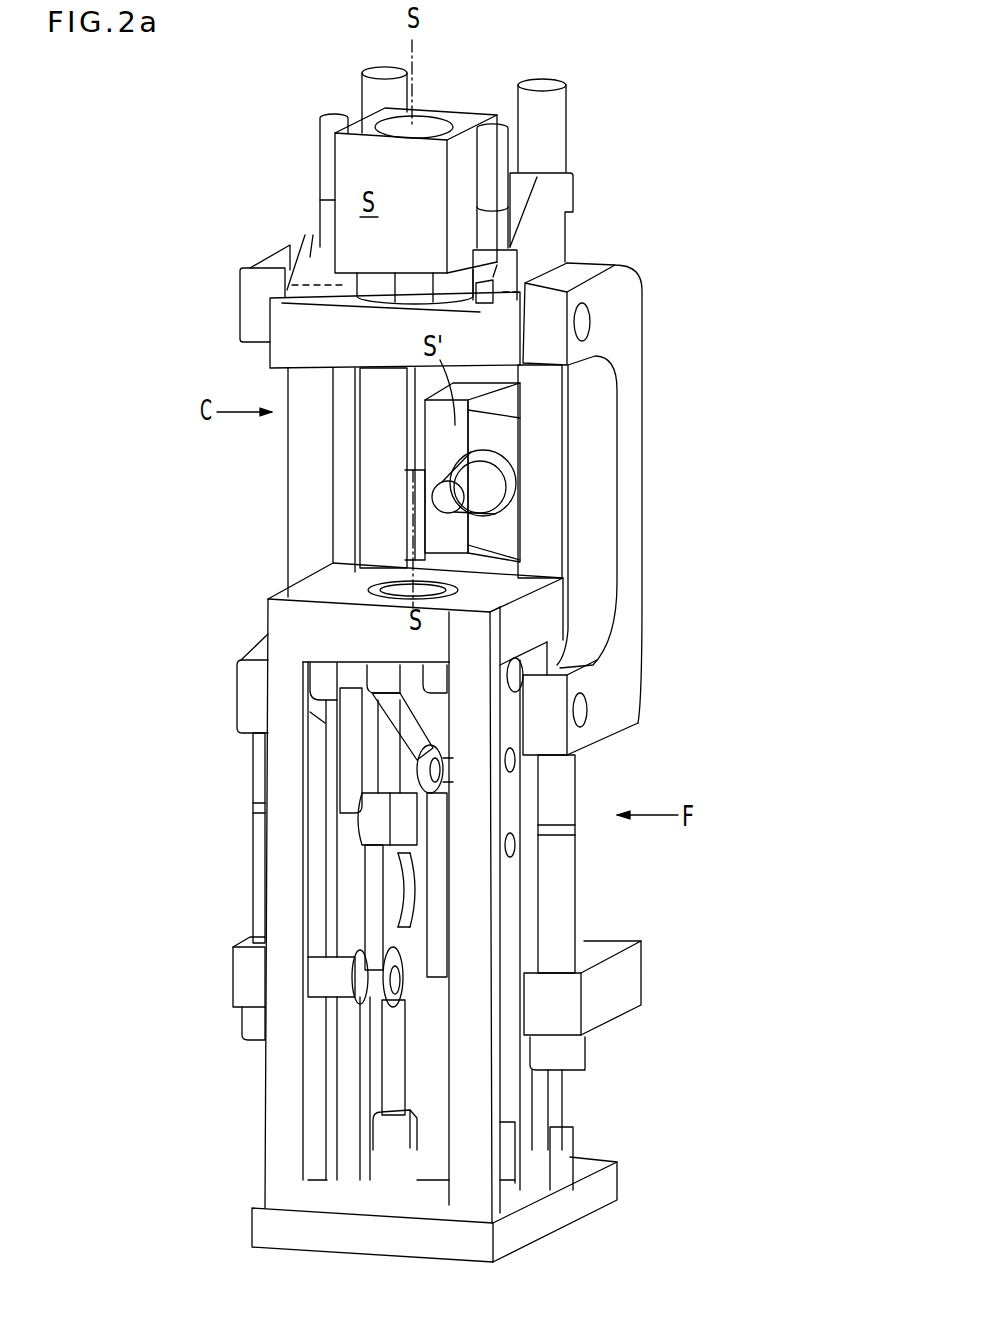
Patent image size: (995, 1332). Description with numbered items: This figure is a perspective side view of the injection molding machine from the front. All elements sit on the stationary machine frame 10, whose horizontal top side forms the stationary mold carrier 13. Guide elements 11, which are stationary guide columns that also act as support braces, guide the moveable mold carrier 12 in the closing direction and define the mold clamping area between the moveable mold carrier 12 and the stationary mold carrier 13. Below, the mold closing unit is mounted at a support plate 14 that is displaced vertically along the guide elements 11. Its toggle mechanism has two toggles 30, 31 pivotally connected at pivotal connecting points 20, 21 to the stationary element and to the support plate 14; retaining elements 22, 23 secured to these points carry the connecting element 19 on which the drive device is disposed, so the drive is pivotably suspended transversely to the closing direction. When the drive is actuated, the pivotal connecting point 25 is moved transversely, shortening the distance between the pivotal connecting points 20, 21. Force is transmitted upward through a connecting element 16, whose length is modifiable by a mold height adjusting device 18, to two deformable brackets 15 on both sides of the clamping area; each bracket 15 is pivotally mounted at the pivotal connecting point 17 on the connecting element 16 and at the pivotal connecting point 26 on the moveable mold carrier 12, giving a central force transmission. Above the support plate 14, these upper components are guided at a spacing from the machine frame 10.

The machine frame 10 is at (293, 623).
The guide elements 11 is at (399, 456).
The moveable mold carrier 12 is at (342, 350).
The stationary mold carrier 13 is at (352, 577).
The support plate 14 is at (253, 967).
The bracket 15 is at (326, 454).
The connecting element 16 is at (260, 783).
The pivotal connecting point 17 is at (587, 712).
The mold height adjusting device 18 is at (258, 1025).
The connecting element 19 is at (445, 787).
The pivotal connecting point 20 is at (476, 658).
The pivotal connecting point 21 is at (398, 987).
The retaining element 22 is at (403, 882).
The retaining element 23 is at (393, 708).
The pivotal connecting point 25 is at (418, 843).
The pivotal connecting point 26 is at (583, 305).
The toggle 30 is at (484, 906).
The toggle 31 is at (352, 768).